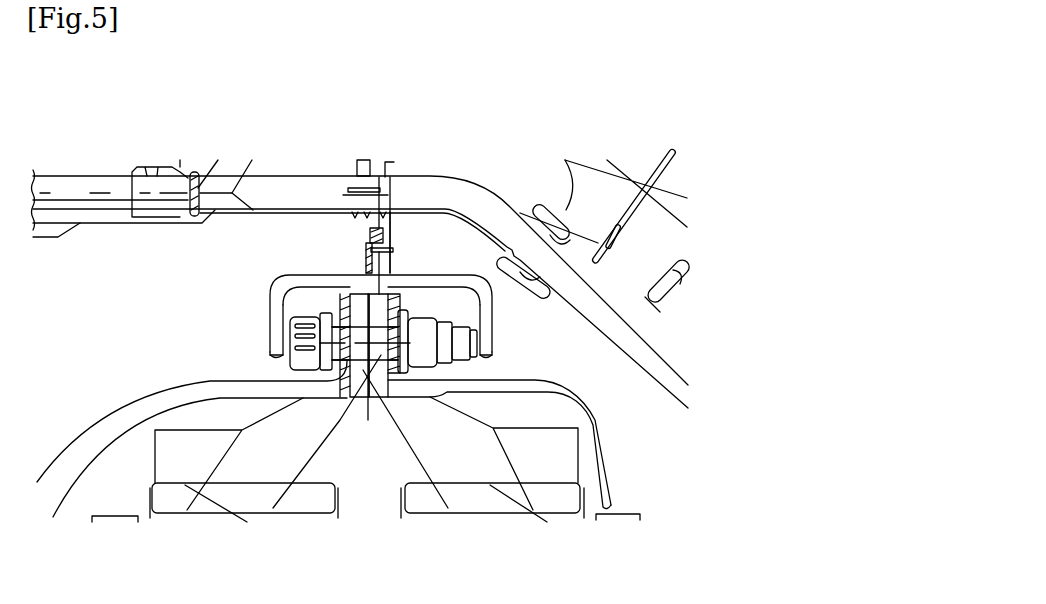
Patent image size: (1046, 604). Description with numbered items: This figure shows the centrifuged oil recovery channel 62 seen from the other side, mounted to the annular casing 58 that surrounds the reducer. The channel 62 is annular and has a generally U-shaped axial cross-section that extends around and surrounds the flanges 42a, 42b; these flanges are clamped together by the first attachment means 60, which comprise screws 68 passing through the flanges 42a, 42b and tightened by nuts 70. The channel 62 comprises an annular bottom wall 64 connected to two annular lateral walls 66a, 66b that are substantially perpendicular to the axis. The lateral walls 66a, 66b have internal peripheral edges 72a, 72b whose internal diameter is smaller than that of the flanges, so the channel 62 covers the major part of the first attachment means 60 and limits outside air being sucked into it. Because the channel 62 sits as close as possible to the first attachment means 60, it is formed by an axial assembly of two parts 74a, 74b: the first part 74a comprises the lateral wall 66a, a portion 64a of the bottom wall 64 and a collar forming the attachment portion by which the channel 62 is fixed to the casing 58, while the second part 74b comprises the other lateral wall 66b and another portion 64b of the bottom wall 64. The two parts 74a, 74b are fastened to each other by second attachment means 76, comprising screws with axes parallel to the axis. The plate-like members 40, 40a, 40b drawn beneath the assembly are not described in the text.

The cowl plate 40 is at (260, 465).
The cowl plate right portion 40a is at (460, 463).
The cowl plate left portion 40b is at (231, 458).
The flange 42a is at (421, 278).
The flange 42b is at (348, 265).
The annular casing 58 is at (407, 187).
The first attachment means 60 is at (466, 358).
The centrifuged oil recovery channel 62 is at (469, 267).
The bottom wall 64 is at (483, 288).
The portion of the bottom wall 64a is at (436, 288).
The portion of the bottom wall 64b is at (306, 277).
The lateral wall 66a is at (490, 330).
The lateral wall 66b is at (268, 303).
The screw 68 is at (300, 314).
The nut 70 is at (413, 318).
The internal peripheral edge 72a is at (487, 357).
The internal peripheral edge 72b is at (270, 360).
The first part 74a is at (401, 227).
The second part 74b is at (356, 246).
The second attachment means 76 is at (350, 240).